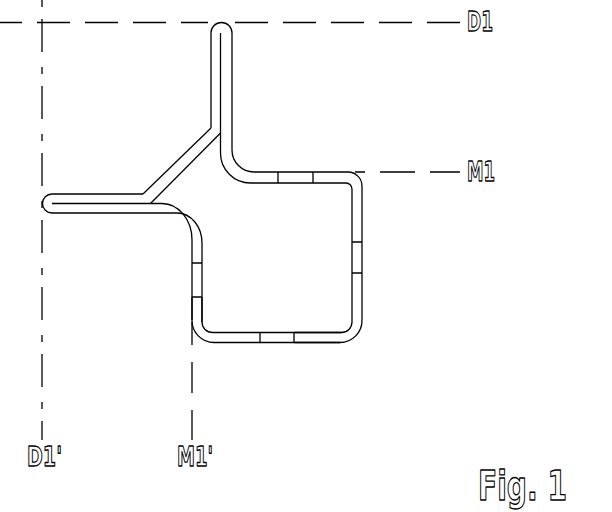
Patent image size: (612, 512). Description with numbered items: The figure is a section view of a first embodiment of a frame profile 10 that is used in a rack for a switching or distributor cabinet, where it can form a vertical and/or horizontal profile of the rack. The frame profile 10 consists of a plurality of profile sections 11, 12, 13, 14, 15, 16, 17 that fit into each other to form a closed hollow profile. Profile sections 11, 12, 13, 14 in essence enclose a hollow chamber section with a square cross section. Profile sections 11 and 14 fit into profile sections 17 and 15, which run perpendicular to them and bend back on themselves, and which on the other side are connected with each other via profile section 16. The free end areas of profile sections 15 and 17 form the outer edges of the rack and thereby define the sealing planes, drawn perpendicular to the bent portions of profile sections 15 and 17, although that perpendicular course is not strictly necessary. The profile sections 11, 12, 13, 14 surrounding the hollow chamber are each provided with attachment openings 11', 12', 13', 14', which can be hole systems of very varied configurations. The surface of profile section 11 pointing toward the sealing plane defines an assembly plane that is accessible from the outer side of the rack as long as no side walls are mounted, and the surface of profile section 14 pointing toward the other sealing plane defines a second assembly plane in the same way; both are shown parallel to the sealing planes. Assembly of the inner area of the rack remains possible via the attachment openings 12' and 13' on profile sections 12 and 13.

The frame profile 10 is at (261, 226).
The profile section 11 is at (330, 149).
The attachment opening 11' is at (295, 149).
The profile section 12 is at (385, 297).
The attachment opening 12' is at (387, 256).
The profile section 13 is at (318, 368).
The attachment opening 13' is at (277, 368).
The profile section 14 is at (167, 315).
The attachment opening 14' is at (167, 280).
The profile section 15 is at (100, 216).
The profile section 16 is at (173, 164).
The profile section 17 is at (233, 81).